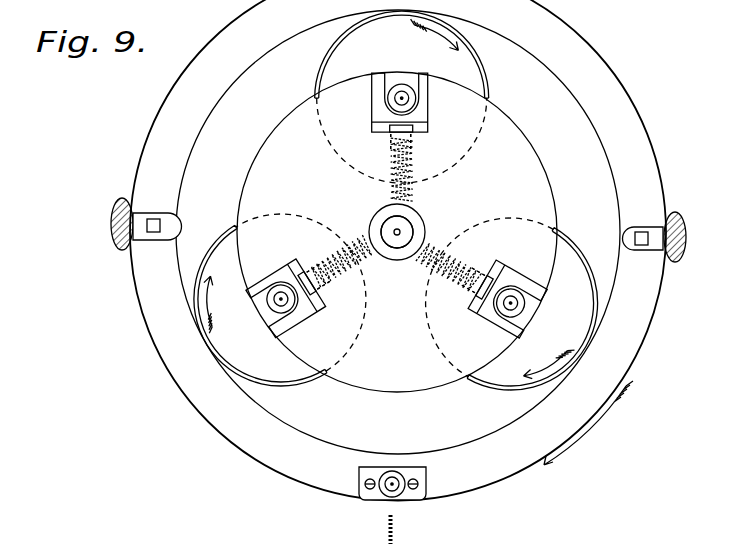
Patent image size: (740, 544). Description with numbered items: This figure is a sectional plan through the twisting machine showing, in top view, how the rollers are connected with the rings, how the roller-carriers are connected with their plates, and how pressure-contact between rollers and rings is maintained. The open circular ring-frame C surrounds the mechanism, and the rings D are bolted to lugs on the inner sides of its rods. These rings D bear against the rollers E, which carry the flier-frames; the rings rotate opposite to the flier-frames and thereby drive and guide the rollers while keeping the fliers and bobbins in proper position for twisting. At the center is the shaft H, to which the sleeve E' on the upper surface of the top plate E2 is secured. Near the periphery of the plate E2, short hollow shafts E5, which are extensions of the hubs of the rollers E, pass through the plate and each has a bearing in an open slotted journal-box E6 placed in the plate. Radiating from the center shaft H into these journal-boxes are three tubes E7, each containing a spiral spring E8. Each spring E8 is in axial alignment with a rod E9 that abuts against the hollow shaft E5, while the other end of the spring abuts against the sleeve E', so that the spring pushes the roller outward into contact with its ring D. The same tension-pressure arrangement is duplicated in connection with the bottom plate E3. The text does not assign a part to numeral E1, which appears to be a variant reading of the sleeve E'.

The ring D is at (398, 272).
The ring-frame C is at (409, 230).
The top plate E2 is at (397, 232).
The roller E is at (395, 216).
The open slotted journal-box E6 is at (416, 102).
The rod E9 is at (302, 298).
The short hollow shaft E5 is at (388, 98).
The spiral spring E8 is at (396, 221).
The bottom plate E3 is at (396, 213).
The tube E7 is at (412, 150).
The center shaft H is at (408, 227).
The sleeve E' is at (392, 255).
The hub collar E1 is at (390, 262).